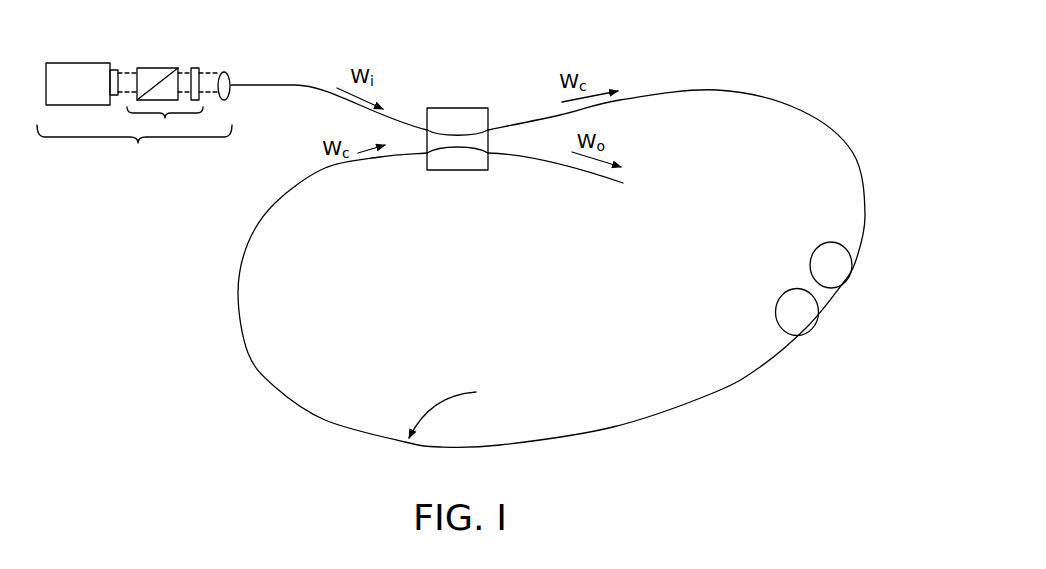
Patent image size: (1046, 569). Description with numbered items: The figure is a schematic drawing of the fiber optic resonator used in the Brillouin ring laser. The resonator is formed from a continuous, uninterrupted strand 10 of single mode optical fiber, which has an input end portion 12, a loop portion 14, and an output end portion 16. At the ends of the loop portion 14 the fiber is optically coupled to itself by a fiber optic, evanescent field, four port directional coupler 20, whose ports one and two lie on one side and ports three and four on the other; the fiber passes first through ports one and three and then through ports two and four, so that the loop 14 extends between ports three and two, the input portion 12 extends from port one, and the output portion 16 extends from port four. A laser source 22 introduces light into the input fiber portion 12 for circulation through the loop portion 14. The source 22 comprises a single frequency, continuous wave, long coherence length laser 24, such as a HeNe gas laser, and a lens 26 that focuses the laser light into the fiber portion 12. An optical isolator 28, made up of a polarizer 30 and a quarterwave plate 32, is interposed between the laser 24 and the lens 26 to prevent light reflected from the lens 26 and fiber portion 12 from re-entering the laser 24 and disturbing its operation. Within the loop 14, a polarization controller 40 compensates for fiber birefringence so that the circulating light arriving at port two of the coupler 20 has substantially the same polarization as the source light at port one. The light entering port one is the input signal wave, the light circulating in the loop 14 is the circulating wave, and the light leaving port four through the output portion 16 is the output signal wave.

The strand of single mode optical fiber 10 is at (670, 90).
The input end portion 12 is at (318, 97).
The loop portion 14 is at (737, 388).
The output end portion 16 is at (573, 167).
The directional coupler 20 is at (474, 108).
The laser source 22 is at (150, 99).
The laser 24 is at (95, 62).
The lens 26 is at (227, 73).
The optical isolator 28 is at (172, 81).
The polarizer 30 is at (165, 68).
The quarterwave plate 32 is at (197, 68).
The polarization controller 40 is at (843, 240).